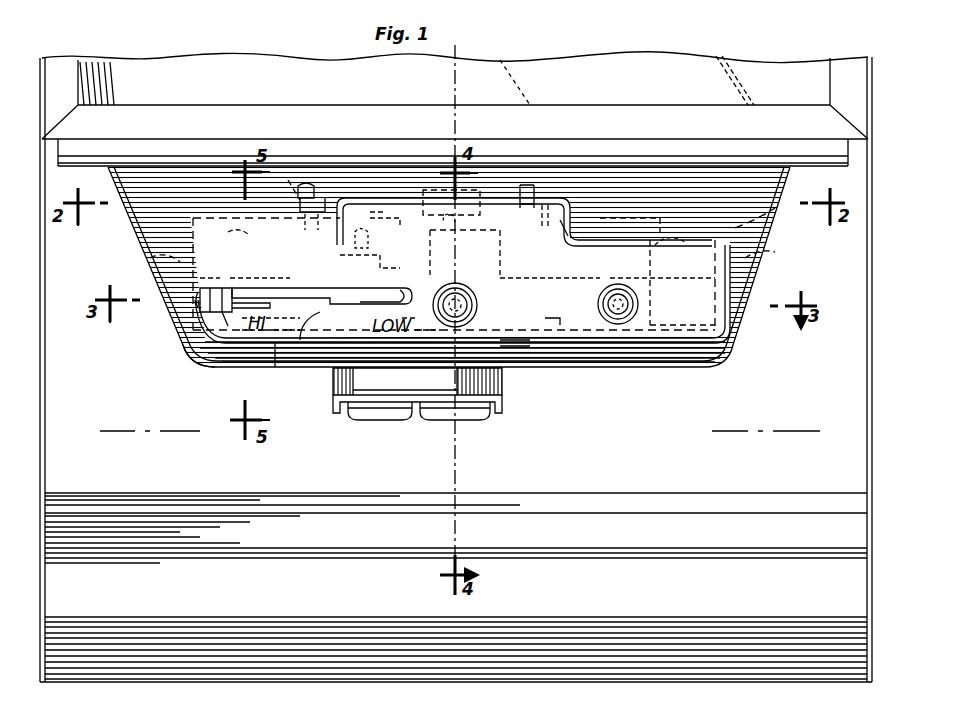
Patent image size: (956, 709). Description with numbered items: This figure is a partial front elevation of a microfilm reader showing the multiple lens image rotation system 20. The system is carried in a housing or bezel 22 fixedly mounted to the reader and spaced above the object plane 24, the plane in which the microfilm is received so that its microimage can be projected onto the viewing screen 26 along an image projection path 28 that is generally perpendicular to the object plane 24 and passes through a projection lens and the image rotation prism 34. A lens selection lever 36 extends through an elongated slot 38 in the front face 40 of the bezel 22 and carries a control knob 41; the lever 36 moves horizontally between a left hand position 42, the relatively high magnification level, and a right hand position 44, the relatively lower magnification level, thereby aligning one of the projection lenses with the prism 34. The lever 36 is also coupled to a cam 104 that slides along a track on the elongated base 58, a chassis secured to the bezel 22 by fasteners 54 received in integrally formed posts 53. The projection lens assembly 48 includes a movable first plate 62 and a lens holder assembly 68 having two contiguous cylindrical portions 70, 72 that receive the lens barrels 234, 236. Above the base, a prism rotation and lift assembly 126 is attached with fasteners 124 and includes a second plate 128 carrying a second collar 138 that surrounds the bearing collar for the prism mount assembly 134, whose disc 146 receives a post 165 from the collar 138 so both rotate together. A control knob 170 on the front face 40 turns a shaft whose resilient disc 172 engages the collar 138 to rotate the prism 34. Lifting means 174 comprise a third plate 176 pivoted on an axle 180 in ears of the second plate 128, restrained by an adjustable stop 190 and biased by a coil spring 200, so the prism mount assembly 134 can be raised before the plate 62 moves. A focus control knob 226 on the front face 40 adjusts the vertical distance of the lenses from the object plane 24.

The multiple lens image rotation system 20 is at (802, 40).
The bezel 22 is at (695, 368).
The object plane 24 is at (783, 430).
The viewing screen 26 is at (636, 56).
The image projection path 28 is at (448, 78).
The image rotation prism 34 is at (432, 190).
The lens selection lever 36 is at (238, 288).
The elongated slot 38 is at (275, 368).
The front face 40 is at (196, 296).
The control knob 41 is at (215, 320).
The left hand position 42 is at (200, 300).
The right hand position 44 is at (380, 302).
The projection lens assembly 48 is at (503, 394).
The posts 53 is at (222, 368).
The fasteners 54 is at (665, 320).
The elongated base 58 is at (728, 326).
The first plate 62 is at (560, 350).
The lens holder assembly 68 is at (332, 395).
The cylindrical portion 70 is at (498, 360).
The cylindrical portion 72 is at (325, 358).
The cam 104 is at (200, 362).
The fasteners 124 is at (148, 262).
The prism rotation and lift assembly 126 is at (598, 205).
The second plate 128 is at (742, 286).
The prism mount assembly 134 is at (362, 205).
The second collar 138 is at (575, 222).
The disc 146 is at (548, 205).
The post 165 is at (520, 175).
The control knob 170 is at (478, 305).
The resilient disc 172 is at (465, 262).
The lifting means 174 is at (228, 232).
The third plate 176 is at (392, 200).
The axle 180 is at (365, 252).
The adjustable stop 190 is at (287, 178).
The coil spring 200 is at (297, 230).
The focus control knob 226 is at (618, 325).
The lens barrel 234 is at (470, 421).
The lens barrel 236 is at (375, 421).